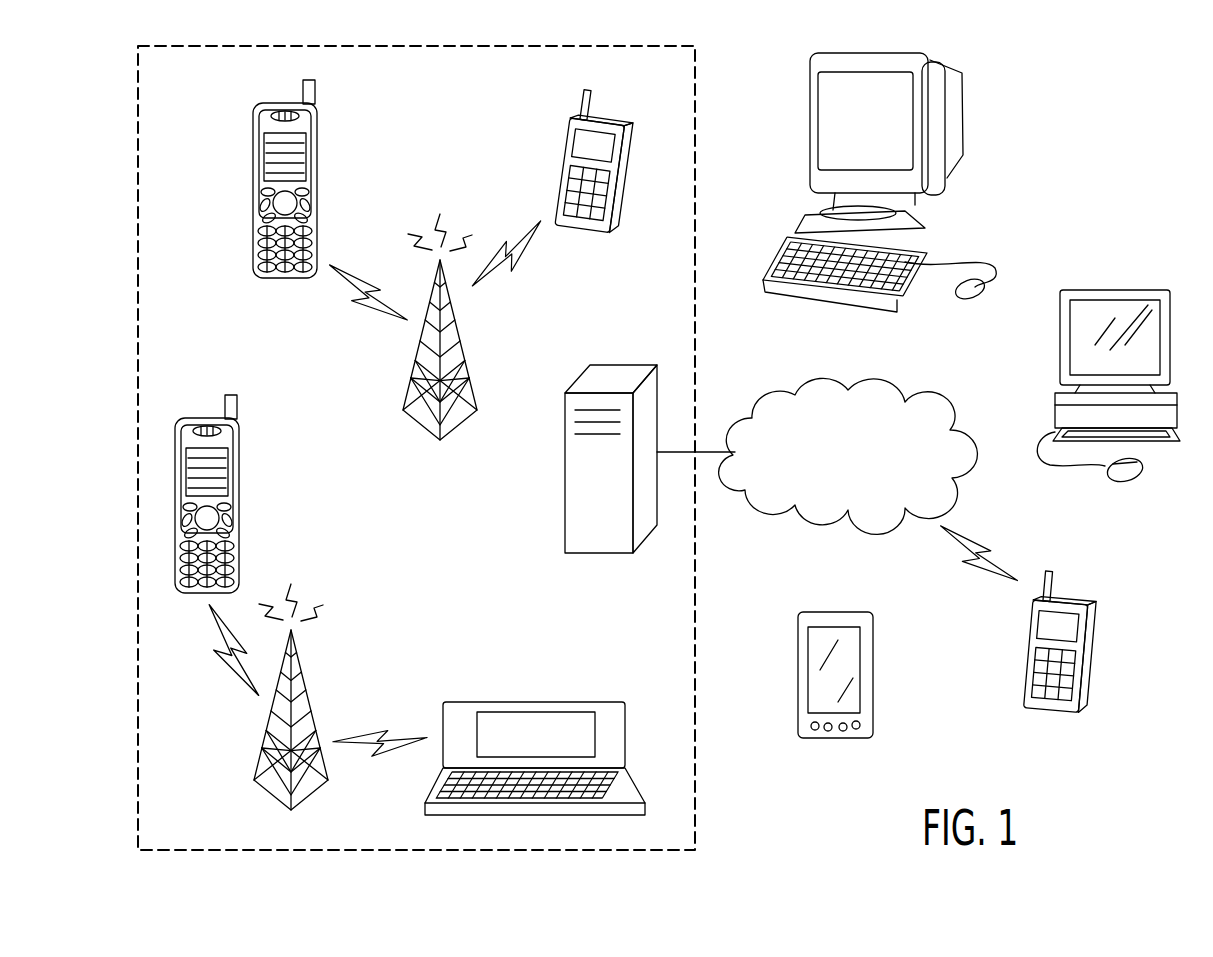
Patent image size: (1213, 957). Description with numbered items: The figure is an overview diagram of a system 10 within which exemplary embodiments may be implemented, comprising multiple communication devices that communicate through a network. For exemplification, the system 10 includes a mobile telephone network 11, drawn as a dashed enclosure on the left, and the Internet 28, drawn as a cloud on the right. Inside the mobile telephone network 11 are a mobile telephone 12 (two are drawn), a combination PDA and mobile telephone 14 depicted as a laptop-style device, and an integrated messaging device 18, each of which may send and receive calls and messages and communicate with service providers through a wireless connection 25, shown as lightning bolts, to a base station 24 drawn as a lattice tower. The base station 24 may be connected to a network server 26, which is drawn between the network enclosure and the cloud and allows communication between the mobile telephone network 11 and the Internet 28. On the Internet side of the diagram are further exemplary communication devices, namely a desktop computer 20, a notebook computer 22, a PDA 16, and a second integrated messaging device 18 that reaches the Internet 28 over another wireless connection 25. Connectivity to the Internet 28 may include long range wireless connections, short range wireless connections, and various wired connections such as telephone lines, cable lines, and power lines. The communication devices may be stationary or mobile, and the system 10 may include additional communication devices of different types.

The system 10 is at (1161, 556).
The mobile telephone network 11 is at (183, 90).
The mobile telephone 12 is at (317, 190).
The combination PDA and mobile telephone 14 is at (535, 703).
The PDA 16 is at (875, 672).
The integrated messaging device 18 is at (563, 168).
The desktop computer 20 is at (963, 110).
The notebook computer 22 is at (1115, 290).
The base station 24 is at (463, 333).
The wireless connection 25 is at (237, 675).
The network server 26 is at (565, 470).
The Internet 28 is at (880, 378).